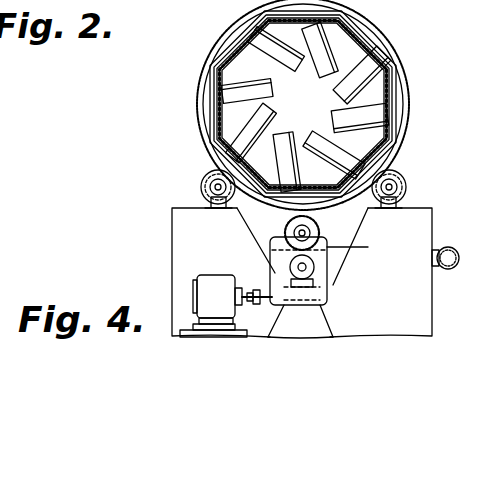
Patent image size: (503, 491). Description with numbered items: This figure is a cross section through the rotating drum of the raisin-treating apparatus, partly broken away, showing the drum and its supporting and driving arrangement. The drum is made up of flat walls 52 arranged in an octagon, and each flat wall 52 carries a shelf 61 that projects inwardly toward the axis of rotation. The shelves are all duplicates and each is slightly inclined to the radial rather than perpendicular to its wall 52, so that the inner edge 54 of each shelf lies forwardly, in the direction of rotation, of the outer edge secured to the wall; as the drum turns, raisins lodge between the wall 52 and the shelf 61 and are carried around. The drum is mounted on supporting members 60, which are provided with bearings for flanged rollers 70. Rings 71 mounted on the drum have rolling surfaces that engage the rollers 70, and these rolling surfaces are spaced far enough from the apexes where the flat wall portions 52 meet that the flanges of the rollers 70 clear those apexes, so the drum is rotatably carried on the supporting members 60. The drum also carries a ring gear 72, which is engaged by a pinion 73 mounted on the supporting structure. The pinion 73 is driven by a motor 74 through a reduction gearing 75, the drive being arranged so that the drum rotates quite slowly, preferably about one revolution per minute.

The flat wall 52 is at (400, 85).
The inner edge of shelf 54 is at (274, 84).
The supporting member 60 is at (188, 232).
The shelf 61 is at (287, 141).
The flanged roller 70 is at (204, 182).
The ring 71 is at (196, 83).
The ring gear 72 is at (205, 66).
The pinion 73 is at (312, 229).
The motor 74 is at (208, 293).
The reduction gearing 75 is at (280, 267).